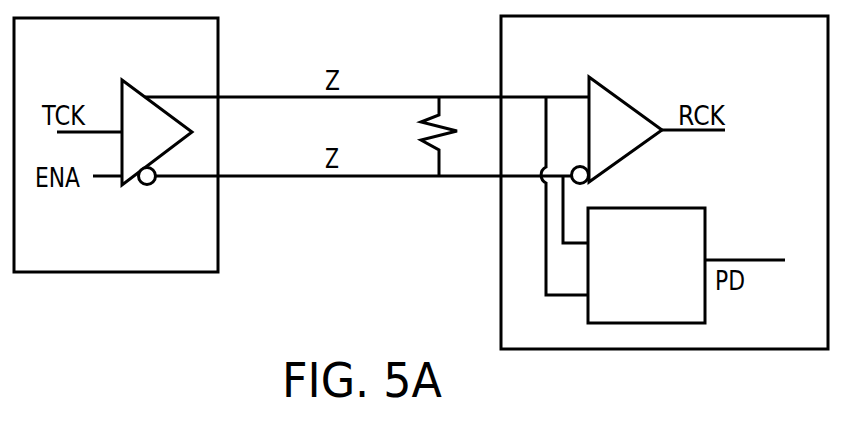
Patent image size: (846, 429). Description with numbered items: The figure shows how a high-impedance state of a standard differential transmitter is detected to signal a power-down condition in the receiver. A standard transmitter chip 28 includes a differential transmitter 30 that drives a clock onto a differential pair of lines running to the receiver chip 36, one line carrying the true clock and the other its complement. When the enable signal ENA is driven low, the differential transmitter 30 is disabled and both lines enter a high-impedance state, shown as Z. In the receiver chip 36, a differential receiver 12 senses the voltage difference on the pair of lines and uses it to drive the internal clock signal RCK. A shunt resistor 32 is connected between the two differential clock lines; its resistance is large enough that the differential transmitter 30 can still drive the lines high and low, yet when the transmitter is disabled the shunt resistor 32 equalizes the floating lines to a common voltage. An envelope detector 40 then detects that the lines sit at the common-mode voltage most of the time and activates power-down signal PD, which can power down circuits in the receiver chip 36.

The transmitter chip 28 is at (50, 60).
The differential transmitter 30 is at (153, 146).
The shunt resistor 32 is at (421, 127).
The receiver chip 36 is at (800, 60).
The differential receiver 12 is at (623, 146).
The envelope detector 40 is at (695, 249).